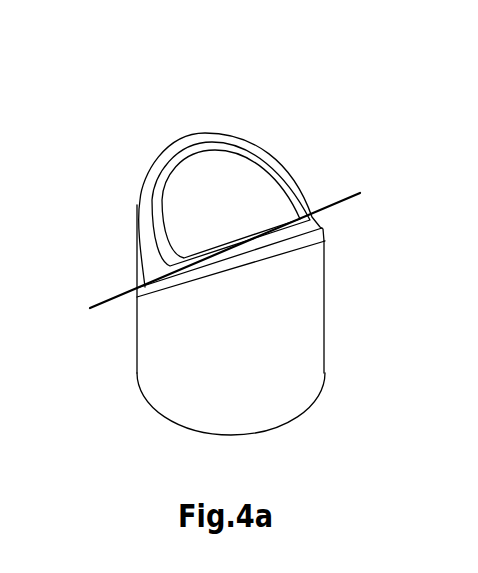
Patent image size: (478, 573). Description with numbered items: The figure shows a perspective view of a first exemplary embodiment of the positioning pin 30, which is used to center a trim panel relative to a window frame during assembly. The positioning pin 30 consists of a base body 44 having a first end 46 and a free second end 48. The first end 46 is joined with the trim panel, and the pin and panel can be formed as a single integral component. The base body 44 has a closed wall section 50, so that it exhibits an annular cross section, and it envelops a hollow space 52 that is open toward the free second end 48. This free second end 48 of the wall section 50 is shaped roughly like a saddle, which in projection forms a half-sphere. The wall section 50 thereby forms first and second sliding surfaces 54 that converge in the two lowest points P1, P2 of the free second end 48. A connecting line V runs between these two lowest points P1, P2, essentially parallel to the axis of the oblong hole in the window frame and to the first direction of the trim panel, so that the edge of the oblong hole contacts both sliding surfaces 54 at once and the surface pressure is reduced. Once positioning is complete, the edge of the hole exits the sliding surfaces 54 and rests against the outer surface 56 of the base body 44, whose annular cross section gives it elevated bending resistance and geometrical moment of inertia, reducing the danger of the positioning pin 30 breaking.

The positioning pin 30 is at (118, 140).
The free second end 48 is at (326, 138).
The hollow space 52 is at (235, 197).
The closed wall section 50 is at (242, 262).
The sliding surface 54 is at (373, 253).
The base body 44 is at (201, 355).
The outer surface 56 is at (273, 353).
The first end 46 is at (157, 440).
The connecting line V is at (108, 301).
The lowest point P1 is at (137, 288).
The lowest point P2 is at (303, 210).